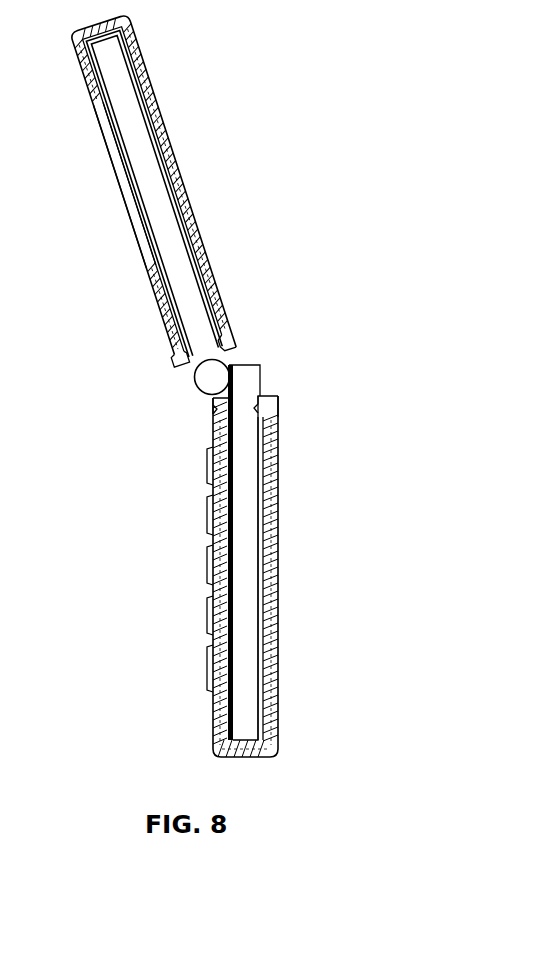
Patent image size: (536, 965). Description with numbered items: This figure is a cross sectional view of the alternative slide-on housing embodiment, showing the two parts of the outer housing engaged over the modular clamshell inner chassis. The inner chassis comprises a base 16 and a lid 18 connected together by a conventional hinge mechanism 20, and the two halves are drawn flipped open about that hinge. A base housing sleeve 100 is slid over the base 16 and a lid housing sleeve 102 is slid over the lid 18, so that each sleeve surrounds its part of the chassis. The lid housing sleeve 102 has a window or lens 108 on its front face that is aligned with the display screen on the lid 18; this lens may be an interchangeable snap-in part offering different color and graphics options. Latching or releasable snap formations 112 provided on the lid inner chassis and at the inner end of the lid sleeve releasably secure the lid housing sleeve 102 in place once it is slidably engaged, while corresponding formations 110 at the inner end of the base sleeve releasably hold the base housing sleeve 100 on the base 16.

The lid 18 is at (136, 130).
The lid housing sleeve 102 is at (186, 184).
The window or lens 108 is at (113, 153).
The latching or releasable snap formations 112 is at (190, 355).
The hinge mechanism 20 is at (207, 378).
The base housing sleeve 100 is at (279, 604).
The base 16 is at (254, 483).
The lower housing hooks 110 is at (236, 408).